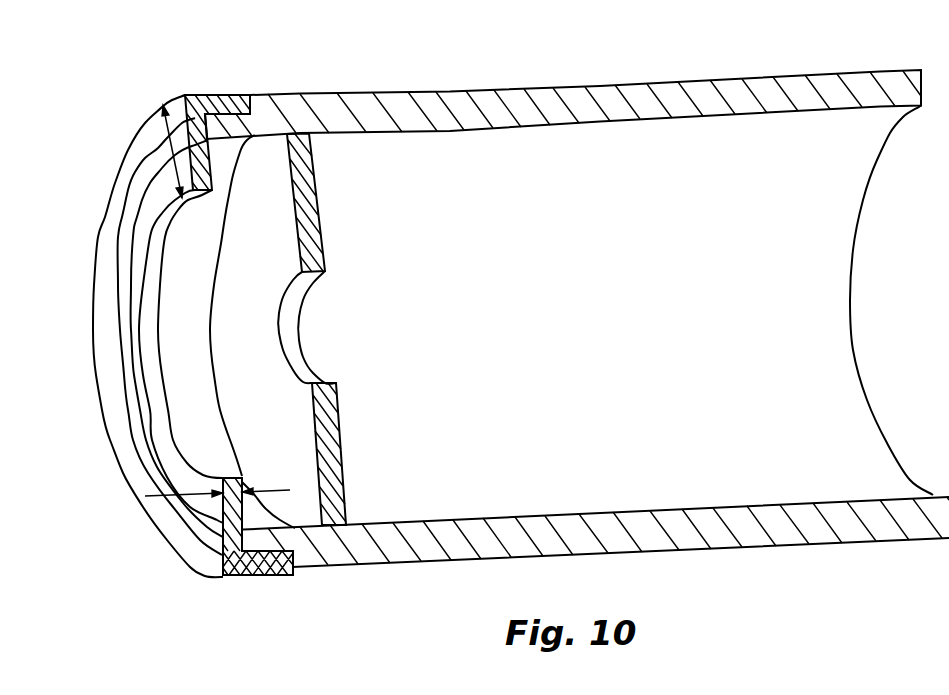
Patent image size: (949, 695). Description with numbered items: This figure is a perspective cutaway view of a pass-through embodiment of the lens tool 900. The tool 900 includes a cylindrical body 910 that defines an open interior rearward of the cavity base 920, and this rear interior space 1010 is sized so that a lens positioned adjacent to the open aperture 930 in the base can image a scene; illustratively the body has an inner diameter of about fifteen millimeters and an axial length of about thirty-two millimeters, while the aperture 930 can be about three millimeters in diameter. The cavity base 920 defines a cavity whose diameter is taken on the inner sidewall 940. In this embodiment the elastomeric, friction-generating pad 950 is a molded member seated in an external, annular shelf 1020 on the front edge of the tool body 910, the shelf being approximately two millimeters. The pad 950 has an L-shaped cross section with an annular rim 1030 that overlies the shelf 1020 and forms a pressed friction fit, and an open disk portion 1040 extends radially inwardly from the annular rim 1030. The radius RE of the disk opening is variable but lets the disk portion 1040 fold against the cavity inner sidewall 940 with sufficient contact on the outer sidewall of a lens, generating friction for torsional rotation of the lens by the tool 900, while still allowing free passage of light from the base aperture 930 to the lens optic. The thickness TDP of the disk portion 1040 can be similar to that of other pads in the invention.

The tool 900 is at (488, 57).
The cylindrical body 910 is at (650, 103).
The cavity base 920 is at (267, 448).
The aperture 930 is at (280, 343).
The inner sidewall 940 is at (236, 145).
The pad 950 is at (233, 75).
The rear interior space 1010 is at (797, 337).
The shelf 1020 is at (273, 552).
The annular rim 1030 is at (243, 577).
The disk portion 1040 is at (202, 507).
The radius RE is at (140, 162).
The thickness of the disk portion TDP is at (169, 497).